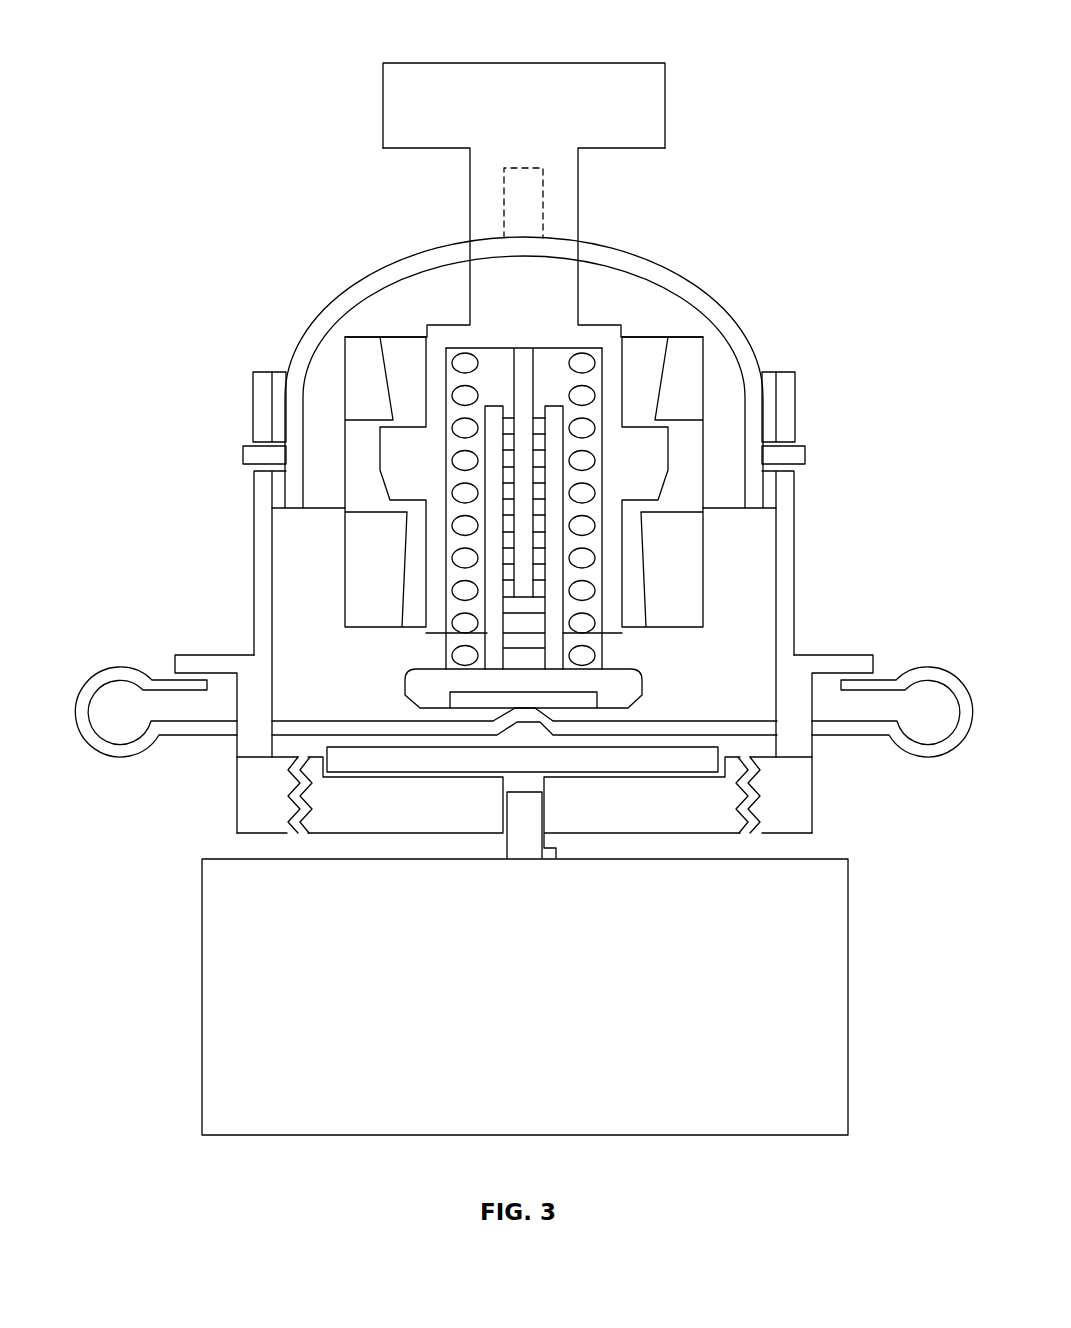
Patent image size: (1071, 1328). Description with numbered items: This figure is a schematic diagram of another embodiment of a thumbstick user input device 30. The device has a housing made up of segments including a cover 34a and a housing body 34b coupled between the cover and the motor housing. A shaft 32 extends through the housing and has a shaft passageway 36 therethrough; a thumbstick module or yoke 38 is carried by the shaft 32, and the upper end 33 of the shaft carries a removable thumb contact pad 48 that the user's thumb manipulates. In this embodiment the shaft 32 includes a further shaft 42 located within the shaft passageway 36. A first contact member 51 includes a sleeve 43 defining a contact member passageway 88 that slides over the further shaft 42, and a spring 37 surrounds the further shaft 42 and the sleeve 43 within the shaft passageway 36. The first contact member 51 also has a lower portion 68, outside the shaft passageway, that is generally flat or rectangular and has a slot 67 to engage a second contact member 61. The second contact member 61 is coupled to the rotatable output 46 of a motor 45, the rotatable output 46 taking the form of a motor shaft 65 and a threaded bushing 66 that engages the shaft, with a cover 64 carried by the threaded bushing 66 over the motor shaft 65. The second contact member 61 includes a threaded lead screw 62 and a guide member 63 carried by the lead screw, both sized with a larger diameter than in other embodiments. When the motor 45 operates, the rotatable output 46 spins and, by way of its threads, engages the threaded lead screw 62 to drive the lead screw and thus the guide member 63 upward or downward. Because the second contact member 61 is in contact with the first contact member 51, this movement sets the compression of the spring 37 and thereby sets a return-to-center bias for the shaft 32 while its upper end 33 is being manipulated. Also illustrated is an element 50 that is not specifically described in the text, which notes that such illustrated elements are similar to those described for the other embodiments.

The thumbstick user input device 30 is at (248, 136).
The removable thumb contact pad 48 is at (637, 100).
The shaft 32 is at (608, 316).
The upper end of the shaft 33 is at (545, 228).
The cover 34a is at (365, 278).
The housing body 34b is at (263, 498).
The thumbstick module or yoke 38 is at (358, 387).
The further shaft 42 is at (503, 380).
The shaft passageway 36 is at (593, 370).
The sleeve 43 is at (533, 635).
The contact member passageway 88 is at (567, 648).
The spring 37 is at (463, 627).
The slot 67 is at (580, 702).
The lower portion of the first contact member 68 is at (405, 688).
The first contact member 51 is at (355, 657).
The flange chamber 50 is at (675, 665).
The guide member 63 is at (122, 683).
The second contact member 61 is at (203, 776).
The threaded lead screw 62 is at (797, 797).
The threaded bushing 66 is at (328, 810).
The cover 64 is at (703, 760).
The motor shaft 65 is at (547, 853).
The motor 45 is at (228, 1025).
The rotatable output 46 is at (331, 853).